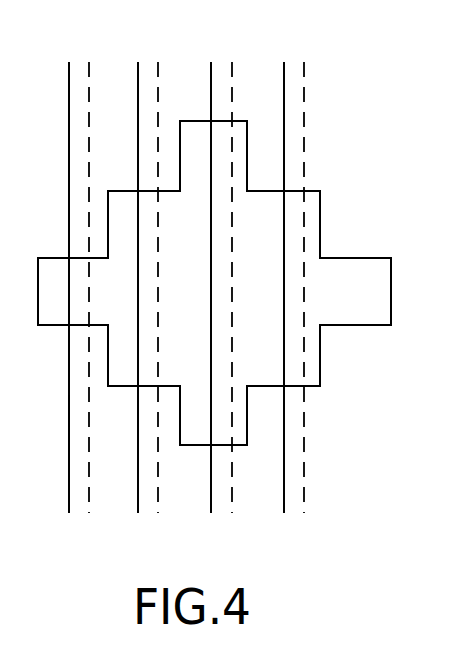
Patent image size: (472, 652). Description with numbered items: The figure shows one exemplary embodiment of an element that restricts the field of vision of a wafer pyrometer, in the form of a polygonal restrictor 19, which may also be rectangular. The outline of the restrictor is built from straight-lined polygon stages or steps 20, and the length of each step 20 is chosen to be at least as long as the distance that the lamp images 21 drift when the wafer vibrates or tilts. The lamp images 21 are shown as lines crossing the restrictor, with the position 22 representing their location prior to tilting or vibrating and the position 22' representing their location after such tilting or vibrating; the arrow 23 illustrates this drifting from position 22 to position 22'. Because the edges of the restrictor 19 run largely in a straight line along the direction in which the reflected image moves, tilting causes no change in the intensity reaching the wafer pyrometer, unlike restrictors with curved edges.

The polygonal restrictor 19 is at (366, 131).
The polygon stage or step 20 is at (364, 257).
The lamp images 21 is at (187, 269).
The position prior to tilting or vibrating 22 is at (178, 304).
The position after tilting or vibrating 22' is at (213, 304).
The arrow 23 is at (83, 432).